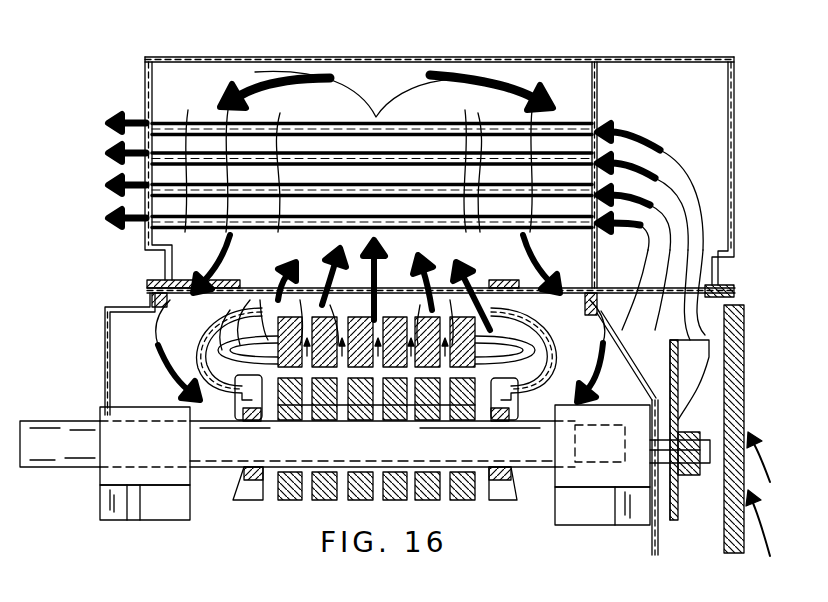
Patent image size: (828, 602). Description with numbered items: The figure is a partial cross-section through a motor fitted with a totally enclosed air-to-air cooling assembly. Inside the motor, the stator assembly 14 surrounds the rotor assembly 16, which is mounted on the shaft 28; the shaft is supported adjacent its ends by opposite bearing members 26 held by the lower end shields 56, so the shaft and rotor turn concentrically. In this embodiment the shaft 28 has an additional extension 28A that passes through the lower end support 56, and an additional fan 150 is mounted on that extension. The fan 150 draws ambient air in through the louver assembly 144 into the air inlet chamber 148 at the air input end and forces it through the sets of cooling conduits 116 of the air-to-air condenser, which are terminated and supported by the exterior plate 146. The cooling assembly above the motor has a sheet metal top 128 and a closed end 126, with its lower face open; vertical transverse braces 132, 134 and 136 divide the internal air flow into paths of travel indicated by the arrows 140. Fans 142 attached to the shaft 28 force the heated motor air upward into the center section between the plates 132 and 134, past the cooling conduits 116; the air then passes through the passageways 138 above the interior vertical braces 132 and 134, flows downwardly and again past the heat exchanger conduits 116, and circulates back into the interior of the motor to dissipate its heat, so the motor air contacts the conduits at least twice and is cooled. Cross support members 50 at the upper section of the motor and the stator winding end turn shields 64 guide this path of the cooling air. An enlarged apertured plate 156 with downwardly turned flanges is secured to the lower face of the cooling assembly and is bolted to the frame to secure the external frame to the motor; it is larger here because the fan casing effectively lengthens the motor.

The stator assembly 14 is at (392, 300).
The rotor assembly 16 is at (318, 420).
The bearing members 26 is at (133, 407).
The shaft 28 is at (75, 448).
The shaft extension 28A is at (712, 452).
The cross support members 50 is at (150, 292).
The lower end shield 56 is at (655, 555).
The stator winding end turn shields 64 is at (220, 405).
The cooling conduits 116 is at (580, 120).
The closed end 126 is at (735, 96).
The sheet metal top 128 is at (393, 58).
The vertical transverse brace 132 is at (478, 113).
The vertical transverse brace 134 is at (280, 113).
The vertical transverse brace 136 is at (597, 100).
The passageways 138 is at (260, 66).
The arrows 140 is at (262, 65).
The fans 142 is at (250, 500).
The louver assembly 144 is at (735, 553).
The exterior plate 146 is at (145, 72).
The air inlet chamber 148 is at (680, 103).
The fan 150 is at (726, 380).
The apertured plate 156 is at (722, 287).